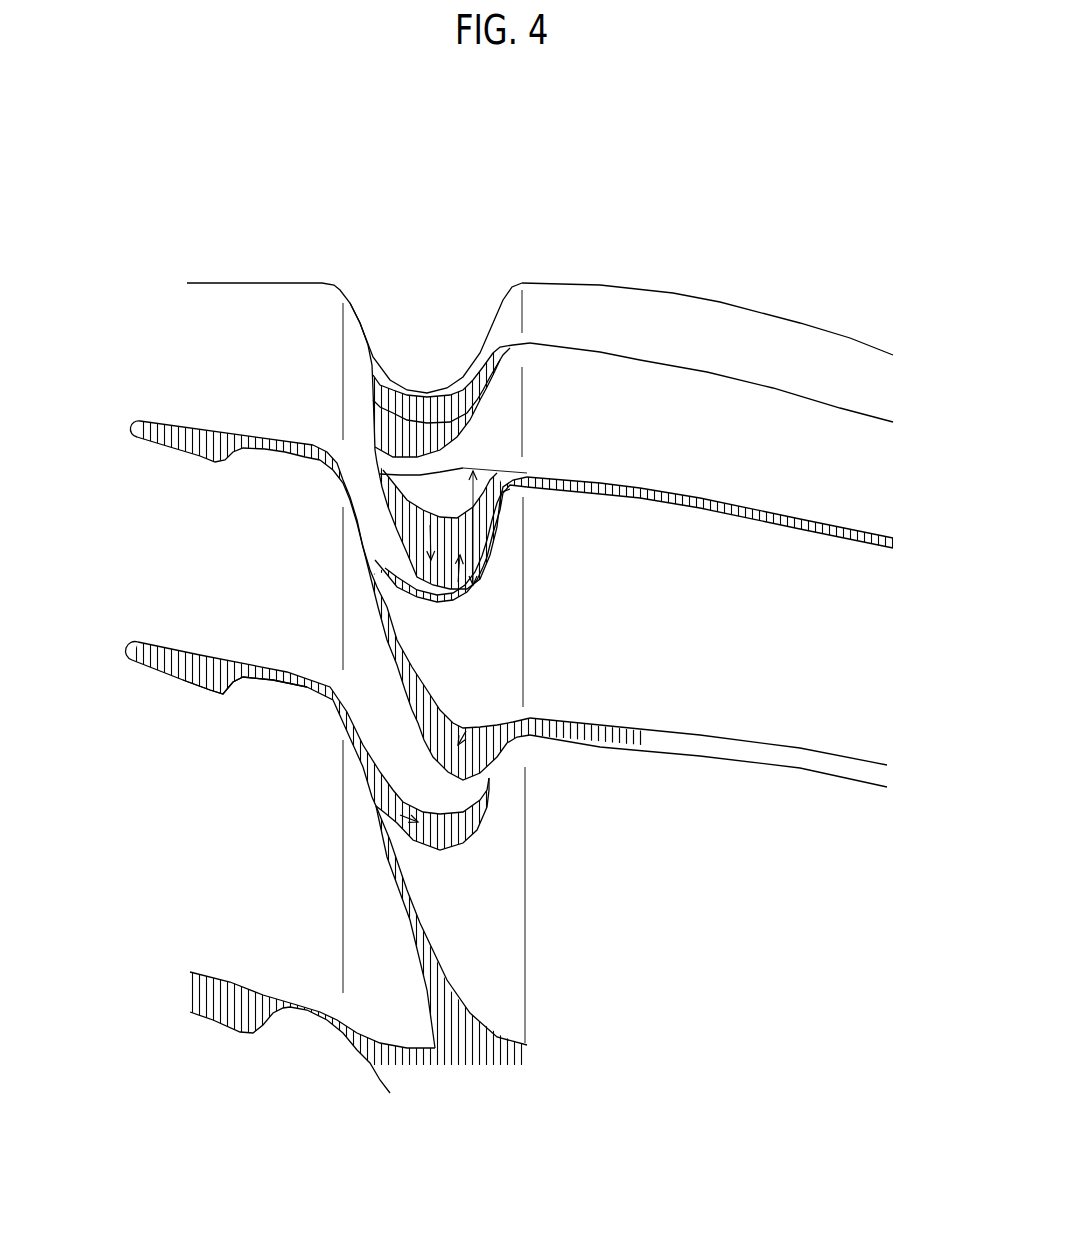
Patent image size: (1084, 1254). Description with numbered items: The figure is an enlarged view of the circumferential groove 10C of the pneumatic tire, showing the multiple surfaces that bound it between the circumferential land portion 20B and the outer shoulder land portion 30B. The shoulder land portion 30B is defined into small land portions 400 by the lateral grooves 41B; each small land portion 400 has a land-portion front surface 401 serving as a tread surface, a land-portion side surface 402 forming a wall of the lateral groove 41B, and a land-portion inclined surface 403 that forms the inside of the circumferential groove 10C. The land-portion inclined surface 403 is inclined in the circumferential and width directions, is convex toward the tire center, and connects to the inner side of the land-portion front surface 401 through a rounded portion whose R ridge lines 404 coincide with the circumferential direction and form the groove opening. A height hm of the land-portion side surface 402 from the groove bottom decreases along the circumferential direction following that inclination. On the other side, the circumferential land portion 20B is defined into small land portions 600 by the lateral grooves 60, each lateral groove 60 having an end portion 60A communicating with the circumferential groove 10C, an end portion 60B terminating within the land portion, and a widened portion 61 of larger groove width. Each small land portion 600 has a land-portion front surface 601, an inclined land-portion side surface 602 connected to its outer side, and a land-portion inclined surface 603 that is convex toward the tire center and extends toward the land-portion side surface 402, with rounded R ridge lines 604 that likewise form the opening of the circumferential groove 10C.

The small land portion 600 is at (148, 353).
The land-portion front surface 601 is at (233, 307).
The land-portion side surface 602 is at (310, 450).
The land-portion inclined surface 603 is at (380, 527).
The R ridge line 604 is at (346, 385).
The lateral groove 60 is at (207, 665).
The end portion 60A is at (305, 678).
The end portion 60B is at (135, 620).
The widened portion 61 is at (243, 697).
The circumferential groove 10C is at (420, 312).
The circumferential land portion 20B is at (271, 232).
The shoulder land portion 30B is at (628, 232).
The small land portion 400 is at (840, 360).
The land-portion front surface 401 is at (671, 308).
The lateral groove 41B is at (708, 373).
The land-portion side surface 402 is at (480, 557).
The land-portion inclined surface 403 is at (477, 355).
The R ridge line 404 is at (508, 418).
The height hm is at (478, 526).